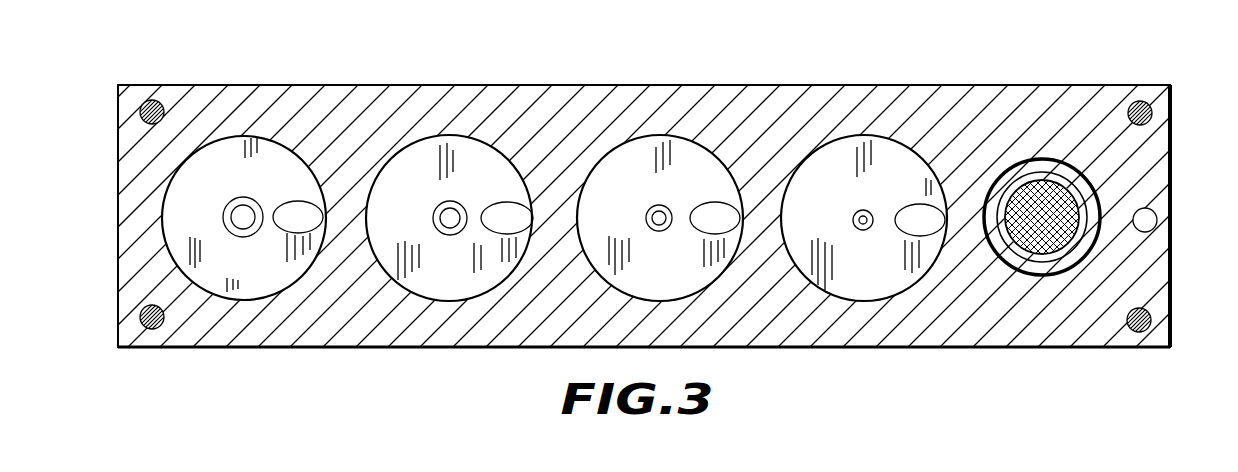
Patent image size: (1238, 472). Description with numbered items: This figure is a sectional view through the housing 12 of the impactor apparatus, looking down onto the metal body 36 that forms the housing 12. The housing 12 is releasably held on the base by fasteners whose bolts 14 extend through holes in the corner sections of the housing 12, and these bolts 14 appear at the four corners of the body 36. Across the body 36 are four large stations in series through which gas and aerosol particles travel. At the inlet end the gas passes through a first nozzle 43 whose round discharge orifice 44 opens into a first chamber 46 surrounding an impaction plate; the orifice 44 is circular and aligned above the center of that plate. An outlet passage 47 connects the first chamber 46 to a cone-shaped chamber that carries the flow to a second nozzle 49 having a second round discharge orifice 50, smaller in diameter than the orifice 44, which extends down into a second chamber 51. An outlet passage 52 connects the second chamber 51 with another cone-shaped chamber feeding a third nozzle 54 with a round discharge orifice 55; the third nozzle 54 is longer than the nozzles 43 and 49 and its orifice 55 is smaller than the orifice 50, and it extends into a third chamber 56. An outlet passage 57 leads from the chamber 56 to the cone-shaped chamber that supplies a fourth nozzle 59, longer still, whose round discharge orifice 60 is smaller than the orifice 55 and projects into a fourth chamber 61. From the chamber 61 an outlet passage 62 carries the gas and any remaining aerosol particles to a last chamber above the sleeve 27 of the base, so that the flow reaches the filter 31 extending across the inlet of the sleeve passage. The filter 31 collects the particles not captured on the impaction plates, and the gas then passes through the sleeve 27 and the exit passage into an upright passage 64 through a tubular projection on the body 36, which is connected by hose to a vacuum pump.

The housing 12 is at (483, 84).
The bolts 14 is at (153, 101).
The metal body 36 is at (653, 99).
The first chamber 46 is at (232, 180).
The first nozzle 43 is at (223, 218).
The discharge orifice 44 is at (243, 222).
The outlet passage 47 is at (299, 206).
The second chamber 51 is at (430, 180).
The second nozzle 49 is at (433, 218).
The second discharge orifice 50 is at (450, 226).
The outlet passage 52 is at (500, 209).
The third chamber 56 is at (606, 180).
The third nozzle 54 is at (646, 218).
The discharge orifice 55 is at (659, 226).
The outlet passage 57 is at (710, 212).
The fourth chamber 61 is at (813, 181).
The fourth nozzle 59 is at (852, 220).
The discharge orifice 60 is at (864, 229).
The outlet passage 62 is at (917, 213).
The sleeve 27 is at (1026, 175).
The filter 31 is at (1064, 208).
The upright passage 64 is at (1159, 220).